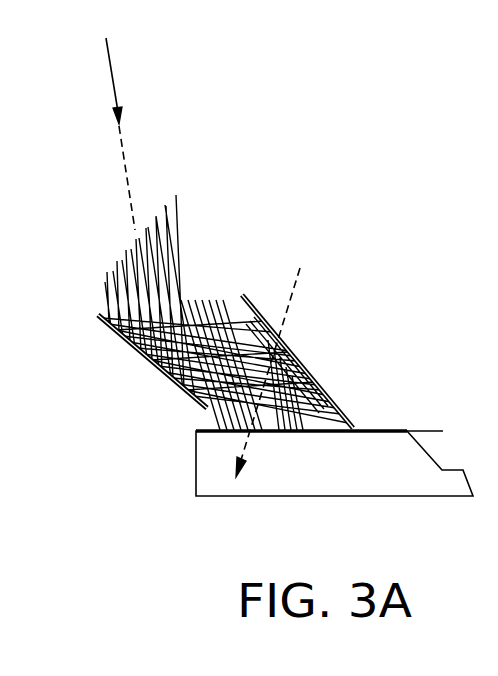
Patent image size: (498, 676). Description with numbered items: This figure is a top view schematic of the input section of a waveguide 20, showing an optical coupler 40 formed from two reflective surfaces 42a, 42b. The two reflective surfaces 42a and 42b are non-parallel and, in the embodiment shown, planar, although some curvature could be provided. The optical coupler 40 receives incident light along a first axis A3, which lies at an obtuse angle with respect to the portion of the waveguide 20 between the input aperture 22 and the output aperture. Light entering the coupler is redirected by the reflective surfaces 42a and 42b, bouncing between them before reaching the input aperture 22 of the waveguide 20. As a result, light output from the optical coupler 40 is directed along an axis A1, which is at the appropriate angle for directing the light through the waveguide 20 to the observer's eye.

The waveguide 20 is at (398, 476).
The input aperture 22 is at (196, 426).
The optical coupler 40 is at (377, 265).
The reflective surface 42a is at (130, 342).
The reflective surface 42b is at (293, 352).
The axis A1 is at (297, 282).
The first axis A3 is at (124, 155).